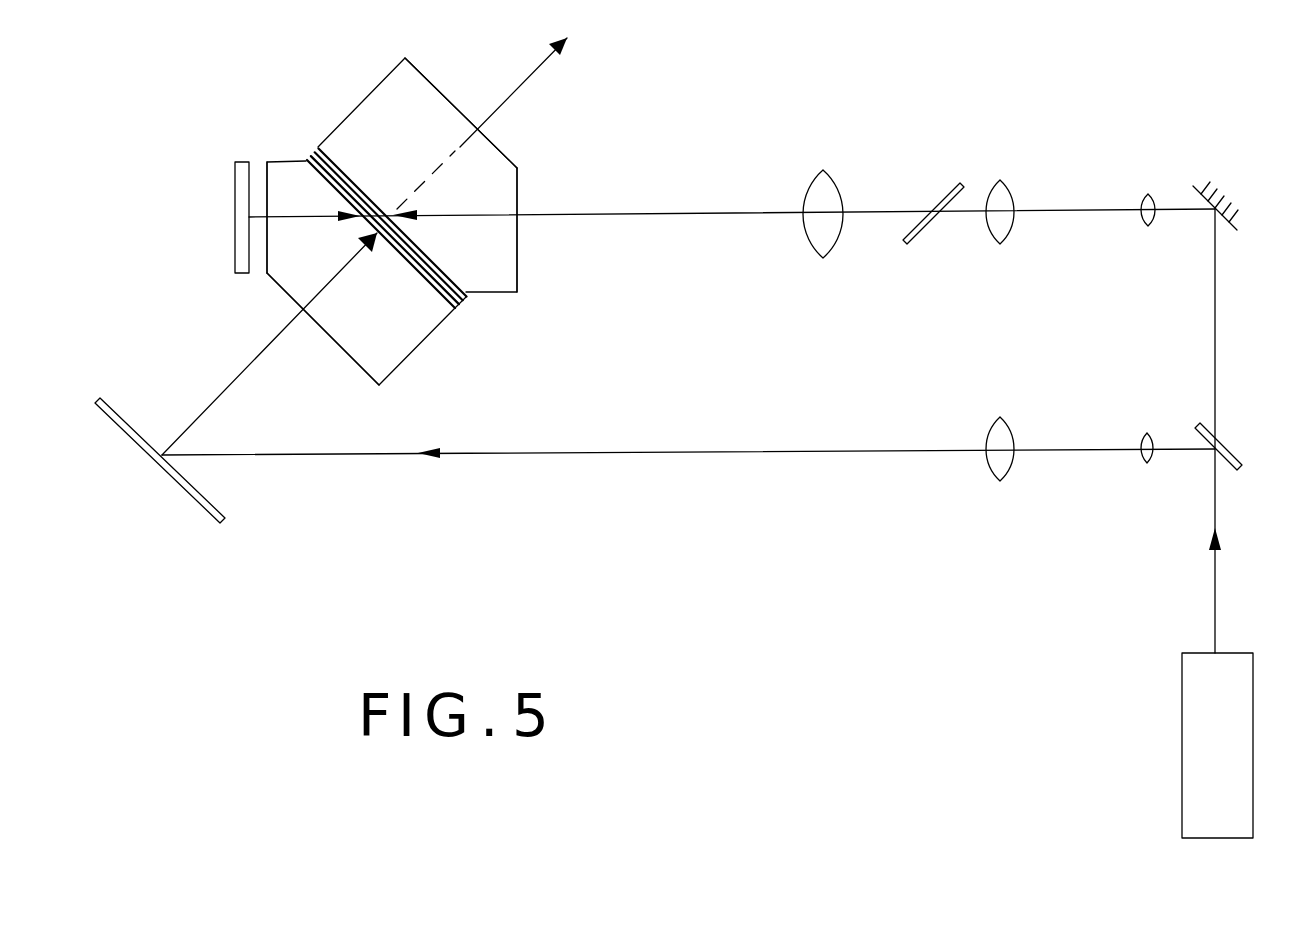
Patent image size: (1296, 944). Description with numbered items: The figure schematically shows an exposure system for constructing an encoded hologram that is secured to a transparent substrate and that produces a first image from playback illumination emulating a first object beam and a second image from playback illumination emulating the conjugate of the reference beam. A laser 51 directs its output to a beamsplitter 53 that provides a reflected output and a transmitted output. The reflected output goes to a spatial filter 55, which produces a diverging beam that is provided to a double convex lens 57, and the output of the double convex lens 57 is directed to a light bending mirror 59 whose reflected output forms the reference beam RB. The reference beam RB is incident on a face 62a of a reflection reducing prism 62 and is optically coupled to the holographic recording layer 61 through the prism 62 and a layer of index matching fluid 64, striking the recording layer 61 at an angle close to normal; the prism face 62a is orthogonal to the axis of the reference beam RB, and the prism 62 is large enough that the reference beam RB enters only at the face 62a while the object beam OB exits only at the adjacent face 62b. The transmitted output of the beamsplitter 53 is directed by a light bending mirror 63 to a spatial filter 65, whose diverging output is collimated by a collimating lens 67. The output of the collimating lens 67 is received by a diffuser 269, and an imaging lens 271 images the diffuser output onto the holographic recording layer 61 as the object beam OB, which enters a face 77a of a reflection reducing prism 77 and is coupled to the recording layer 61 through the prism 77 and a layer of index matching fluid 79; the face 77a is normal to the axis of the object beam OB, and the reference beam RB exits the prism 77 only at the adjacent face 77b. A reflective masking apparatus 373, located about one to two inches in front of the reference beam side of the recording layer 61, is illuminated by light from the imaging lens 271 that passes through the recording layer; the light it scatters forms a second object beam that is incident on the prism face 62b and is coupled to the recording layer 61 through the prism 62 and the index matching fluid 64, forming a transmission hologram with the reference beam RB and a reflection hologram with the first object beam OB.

The laser 51 is at (1182, 715).
The beamsplitter 53 is at (1235, 468).
The spatial filter 55 is at (1145, 462).
The double convex lens 57 is at (993, 478).
The light bending mirror 59 is at (190, 507).
The holographic recording layer 61 is at (309, 148).
The reflection reducing prism 62 is at (410, 343).
The prism face 62a is at (360, 375).
The prism face 62b is at (267, 173).
The light bending mirror 63 is at (1236, 232).
The index matching fluid 64 is at (458, 307).
The spatial filter 65 is at (1152, 196).
The collimating lens 67 is at (1012, 192).
The reflection reducing prism 77 is at (387, 89).
The prism face 77a is at (517, 193).
The prism face 77b is at (422, 73).
The index matching fluid 79 is at (314, 146).
The diffuser 269 is at (946, 186).
The imaging lens 271 is at (835, 256).
The reflective masking apparatus 373 is at (235, 263).
The reference beam RB is at (248, 367).
The object beam OB is at (550, 214).